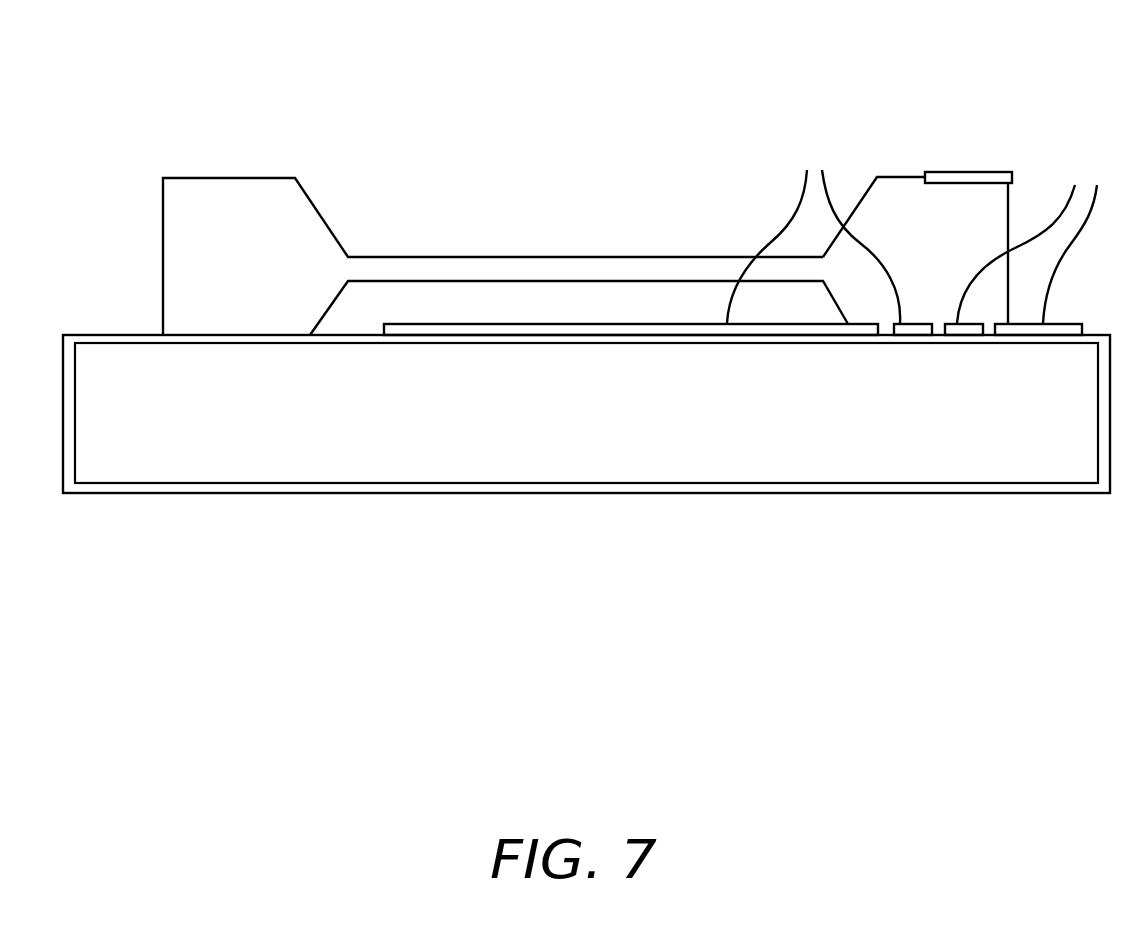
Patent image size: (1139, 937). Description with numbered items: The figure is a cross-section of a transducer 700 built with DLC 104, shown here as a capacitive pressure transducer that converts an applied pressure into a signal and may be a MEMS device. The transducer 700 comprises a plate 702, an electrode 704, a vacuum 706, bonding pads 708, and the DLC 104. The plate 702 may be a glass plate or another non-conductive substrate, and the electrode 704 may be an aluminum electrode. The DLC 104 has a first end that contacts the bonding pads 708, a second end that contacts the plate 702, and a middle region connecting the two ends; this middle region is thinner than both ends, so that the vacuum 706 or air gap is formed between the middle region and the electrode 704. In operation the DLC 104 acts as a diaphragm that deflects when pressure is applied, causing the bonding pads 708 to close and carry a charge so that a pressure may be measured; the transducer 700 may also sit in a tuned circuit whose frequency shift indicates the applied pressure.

The transducer 700 is at (586, 368).
The plate 702 is at (196, 463).
The electrode 704 is at (858, 487).
The vacuum 706 is at (390, 304).
The bonding pads 708 is at (917, 233).
The DLC 104 is at (897, 220).